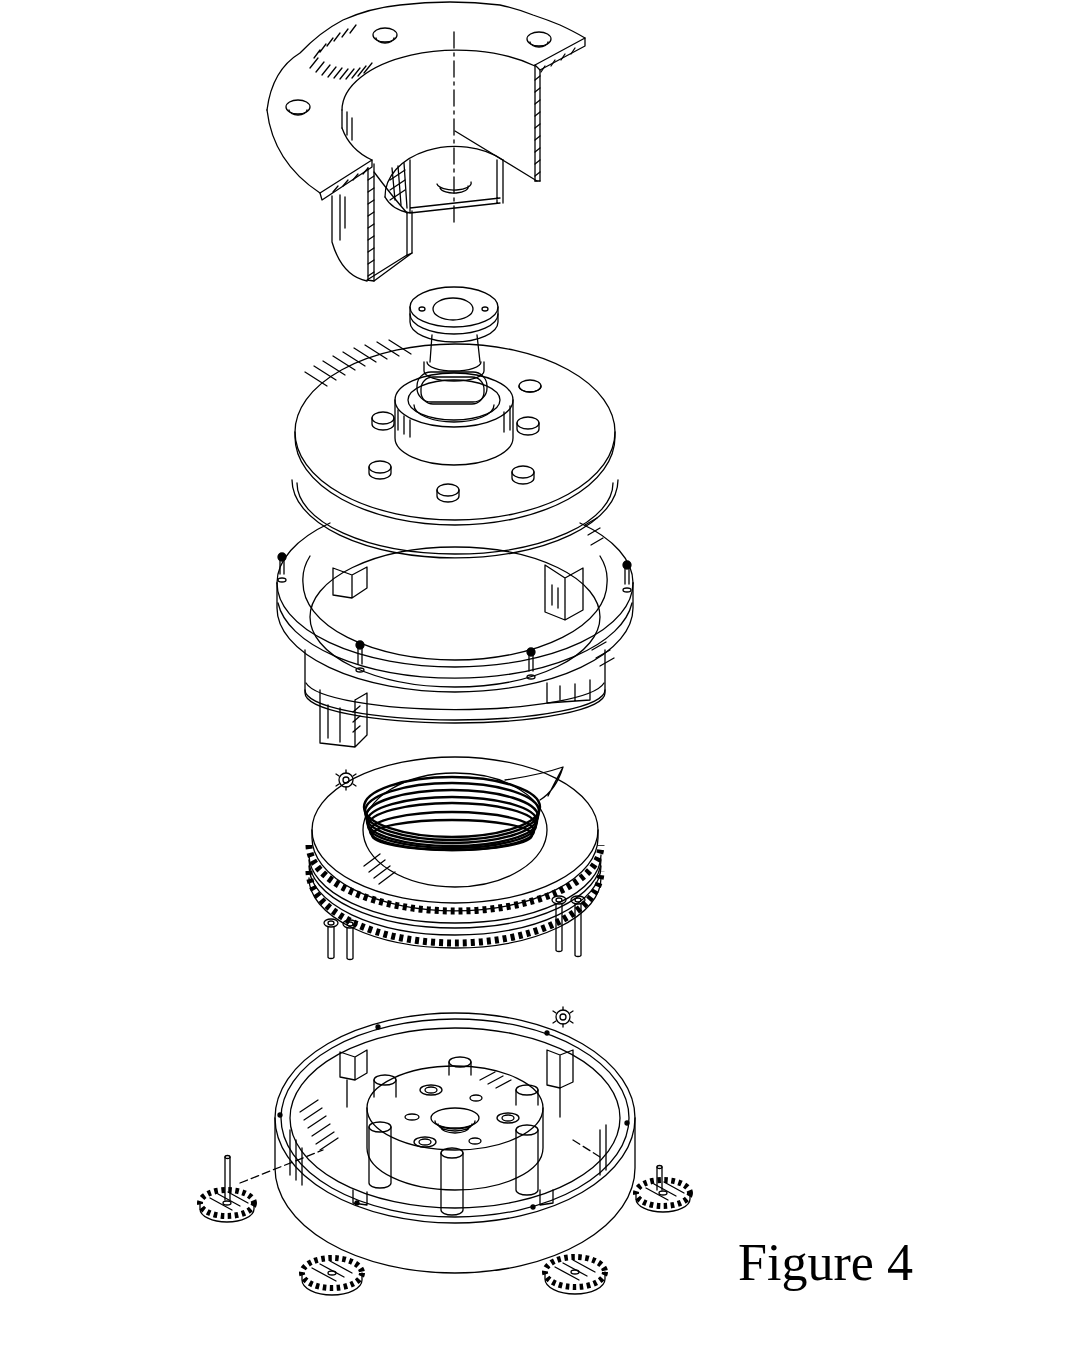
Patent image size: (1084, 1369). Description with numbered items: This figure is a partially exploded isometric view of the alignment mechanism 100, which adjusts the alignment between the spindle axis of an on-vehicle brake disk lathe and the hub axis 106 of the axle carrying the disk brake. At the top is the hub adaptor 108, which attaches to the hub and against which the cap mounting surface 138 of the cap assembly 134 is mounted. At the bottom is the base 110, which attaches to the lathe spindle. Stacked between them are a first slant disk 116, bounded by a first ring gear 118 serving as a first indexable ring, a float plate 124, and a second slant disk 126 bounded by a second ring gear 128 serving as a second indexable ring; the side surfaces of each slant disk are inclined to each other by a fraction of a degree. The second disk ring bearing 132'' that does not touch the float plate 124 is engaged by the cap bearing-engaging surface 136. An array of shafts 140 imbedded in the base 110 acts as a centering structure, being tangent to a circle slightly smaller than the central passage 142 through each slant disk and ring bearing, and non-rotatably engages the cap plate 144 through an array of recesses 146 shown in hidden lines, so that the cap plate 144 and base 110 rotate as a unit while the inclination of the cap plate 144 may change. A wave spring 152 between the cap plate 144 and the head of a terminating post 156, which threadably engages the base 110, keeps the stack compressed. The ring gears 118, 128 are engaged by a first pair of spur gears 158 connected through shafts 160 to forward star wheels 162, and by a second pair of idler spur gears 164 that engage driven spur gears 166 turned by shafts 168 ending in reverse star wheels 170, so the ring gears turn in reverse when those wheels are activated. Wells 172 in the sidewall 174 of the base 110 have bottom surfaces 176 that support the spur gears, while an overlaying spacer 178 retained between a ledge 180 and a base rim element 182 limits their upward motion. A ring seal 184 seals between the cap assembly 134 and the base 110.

The alignment mechanism 100 is at (712, 212).
The hub axis 106 is at (455, 131).
The hub adaptor 108 is at (543, 124).
The base 110 is at (646, 1121).
The first slant disk 116 is at (603, 883).
The first ring gear 118 is at (316, 873).
The float plate 124 is at (550, 841).
The second slant disk 126 is at (600, 822).
The second ring gear 128 is at (312, 828).
The second disk ring bearing 132'' is at (462, 835).
The cap assembly 134 is at (291, 378).
The cap bearing-engaging surface 136 is at (588, 503).
The cap mounting surface 138 is at (548, 407).
The shafts 140 is at (521, 1079).
The central passage 142 is at (481, 790).
The cap plate 144 is at (296, 447).
The recesses 146 is at (530, 470).
The wave spring 152 is at (418, 378).
The terminating post 156 is at (508, 297).
The first pair of spur gears 158 is at (338, 782).
The shafts 160 is at (228, 1170).
The forward star wheels 162 is at (205, 1195).
The second pair of spur gears 164 is at (353, 931).
The driven spur gears 166 is at (326, 920).
The shafts 168 is at (326, 947).
The reverse star wheels 170 is at (306, 1280).
The wells 172 is at (336, 1055).
The sidewall 174 is at (290, 1106).
The bottom surfaces 176 is at (355, 1050).
The spacer 178 is at (306, 661).
The ledge 180 is at (300, 1140).
The base rim element 182 is at (283, 600).
The ring seal 184 is at (295, 493).